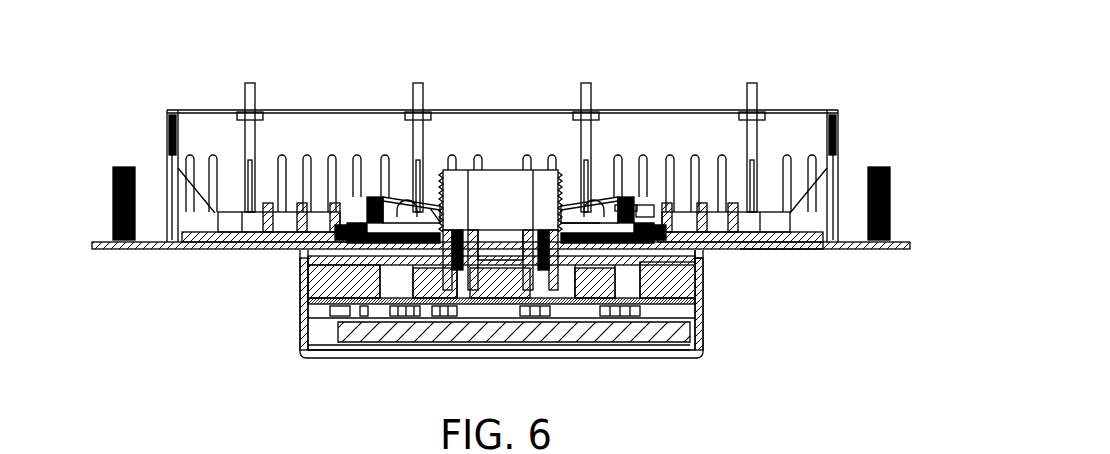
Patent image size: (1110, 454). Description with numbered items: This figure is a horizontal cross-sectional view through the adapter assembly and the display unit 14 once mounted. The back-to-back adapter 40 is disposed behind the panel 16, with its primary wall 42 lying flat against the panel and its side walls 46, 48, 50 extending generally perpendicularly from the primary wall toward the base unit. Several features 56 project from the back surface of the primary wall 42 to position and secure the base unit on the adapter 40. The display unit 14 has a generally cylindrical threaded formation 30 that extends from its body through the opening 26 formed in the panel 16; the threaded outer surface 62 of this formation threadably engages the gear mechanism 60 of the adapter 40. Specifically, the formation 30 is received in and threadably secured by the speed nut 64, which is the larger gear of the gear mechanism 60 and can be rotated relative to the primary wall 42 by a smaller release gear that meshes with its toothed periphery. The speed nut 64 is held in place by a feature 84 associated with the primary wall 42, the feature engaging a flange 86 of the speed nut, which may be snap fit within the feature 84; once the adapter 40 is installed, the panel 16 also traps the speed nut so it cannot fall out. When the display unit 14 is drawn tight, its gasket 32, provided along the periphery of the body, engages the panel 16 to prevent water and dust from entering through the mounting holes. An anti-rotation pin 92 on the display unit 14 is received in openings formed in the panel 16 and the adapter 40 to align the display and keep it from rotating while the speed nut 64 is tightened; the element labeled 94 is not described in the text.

The display unit 14 is at (313, 357).
The panel 16 is at (143, 250).
The opening 26 is at (553, 266).
The cylindrical-shaped threaded formation 30 is at (463, 180).
The gasket 32 is at (700, 253).
The back-to-back adapter 40 is at (837, 109).
The primary wall 42 is at (773, 249).
The side wall 46 is at (499, 140).
The side wall 48 is at (167, 173).
The side wall 50 is at (838, 138).
The features 56 is at (250, 83).
The gear mechanism 60 is at (594, 175).
The threaded outer surface 62 is at (563, 170).
The speed nut 64 is at (375, 200).
The feature 84 is at (663, 197).
The flange 86 is at (693, 302).
The anti-rotation pin 92 is at (642, 205).
The latch member 94 is at (623, 203).